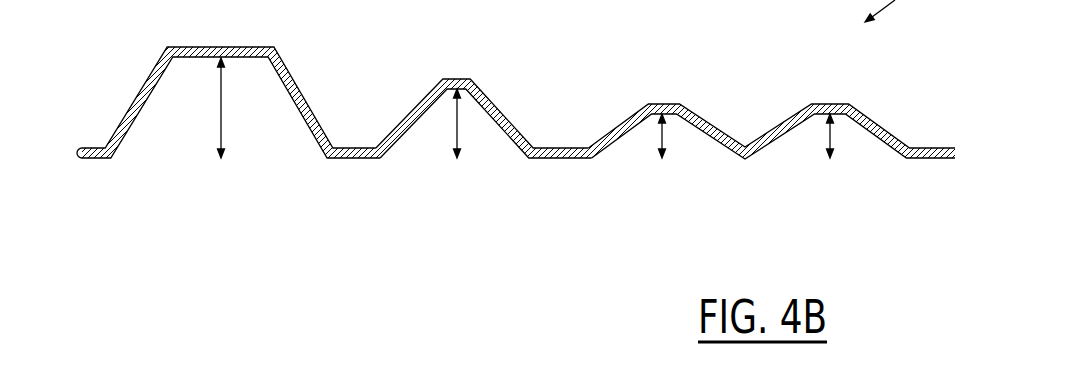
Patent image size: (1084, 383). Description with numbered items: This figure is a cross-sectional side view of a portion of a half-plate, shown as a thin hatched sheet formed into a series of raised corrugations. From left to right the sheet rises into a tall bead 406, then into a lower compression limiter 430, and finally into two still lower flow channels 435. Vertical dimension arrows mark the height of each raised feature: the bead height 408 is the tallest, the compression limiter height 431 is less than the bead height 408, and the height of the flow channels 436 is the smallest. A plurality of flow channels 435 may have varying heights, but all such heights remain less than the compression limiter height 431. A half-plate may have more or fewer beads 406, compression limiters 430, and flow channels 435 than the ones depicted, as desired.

The bead 406 is at (253, 167).
The bead height 408 is at (220, 163).
The compression limiter 430 is at (488, 165).
The compression limiter height 431 is at (456, 163).
The flow channel 435 is at (691, 167).
The flow channel height 436 is at (661, 163).